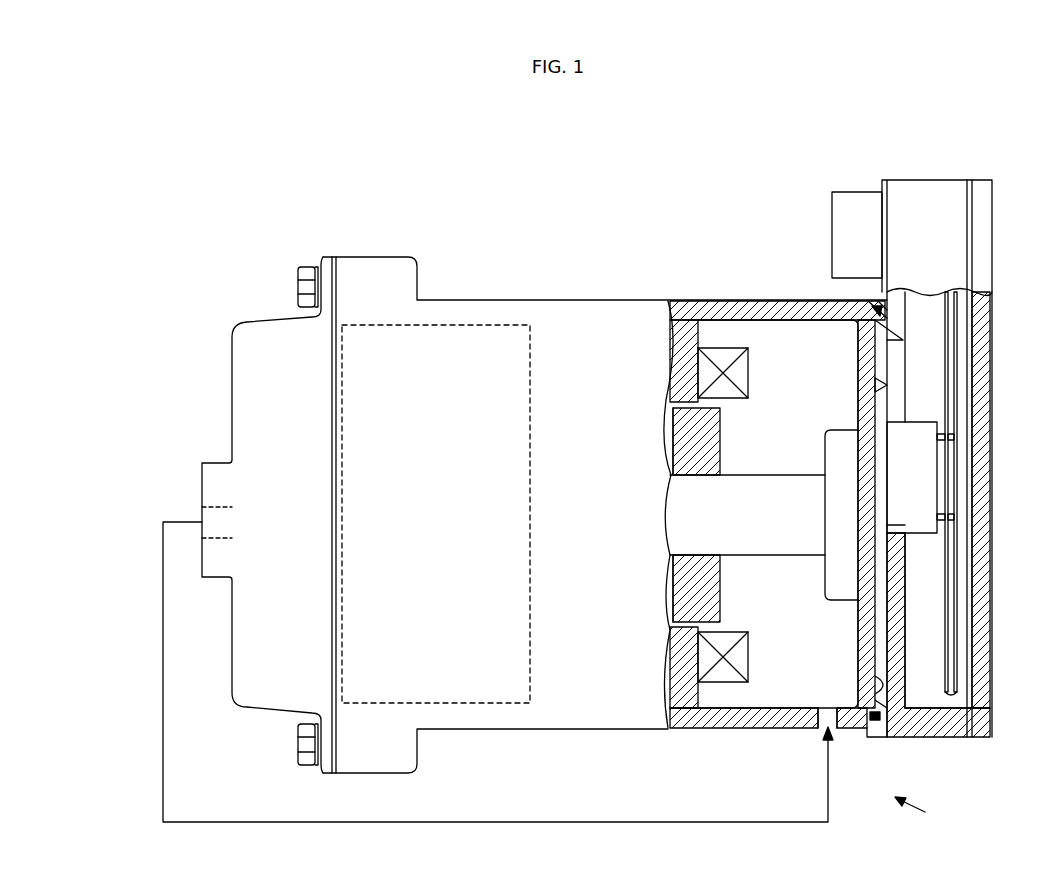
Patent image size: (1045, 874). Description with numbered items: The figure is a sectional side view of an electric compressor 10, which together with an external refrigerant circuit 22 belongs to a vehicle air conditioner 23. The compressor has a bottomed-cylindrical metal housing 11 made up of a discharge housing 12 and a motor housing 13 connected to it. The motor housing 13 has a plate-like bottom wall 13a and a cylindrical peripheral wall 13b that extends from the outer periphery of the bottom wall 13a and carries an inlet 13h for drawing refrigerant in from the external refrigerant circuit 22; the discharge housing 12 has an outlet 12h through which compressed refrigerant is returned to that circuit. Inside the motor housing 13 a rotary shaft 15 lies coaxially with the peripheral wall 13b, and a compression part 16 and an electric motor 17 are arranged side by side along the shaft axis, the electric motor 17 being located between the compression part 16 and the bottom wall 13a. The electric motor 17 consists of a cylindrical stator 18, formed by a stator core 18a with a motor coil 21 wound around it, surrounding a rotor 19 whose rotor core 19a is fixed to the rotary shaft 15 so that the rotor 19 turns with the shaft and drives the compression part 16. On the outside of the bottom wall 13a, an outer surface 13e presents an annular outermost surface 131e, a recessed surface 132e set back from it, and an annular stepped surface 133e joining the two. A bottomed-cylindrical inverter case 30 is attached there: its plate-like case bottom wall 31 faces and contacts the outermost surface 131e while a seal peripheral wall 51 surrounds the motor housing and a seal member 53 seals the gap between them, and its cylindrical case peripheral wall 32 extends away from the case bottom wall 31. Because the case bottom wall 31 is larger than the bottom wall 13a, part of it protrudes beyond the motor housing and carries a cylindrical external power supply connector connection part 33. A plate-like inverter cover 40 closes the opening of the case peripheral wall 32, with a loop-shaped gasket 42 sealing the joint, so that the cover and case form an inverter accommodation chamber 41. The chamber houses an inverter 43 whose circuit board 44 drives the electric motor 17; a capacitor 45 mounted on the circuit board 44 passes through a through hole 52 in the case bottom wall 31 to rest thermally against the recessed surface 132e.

The electric compressor 10 is at (242, 293).
The housing 11 is at (588, 300).
The discharge housing 12 is at (232, 345).
The outlet 12h is at (203, 512).
The motor housing 13 is at (704, 513).
The bottom wall 13a is at (860, 628).
The peripheral wall 13b is at (765, 310).
The outer surface 13e is at (885, 700).
The inlet 13h is at (822, 728).
The rotary shaft 15 is at (766, 552).
The compression part 16 is at (467, 325).
The electric motor 17 is at (690, 320).
The stator 18 is at (757, 515).
The stator core 18a is at (748, 362).
The rotor 19 is at (722, 440).
The rotor core 19a is at (673, 458).
The motor coil 21 is at (794, 356).
The external refrigerant circuit 22 is at (830, 793).
The vehicle air conditioner 23 is at (924, 812).
The inverter case 30 is at (955, 205).
The case bottom wall 31 is at (887, 660).
The case peripheral wall 32 is at (930, 737).
The external power supply connector connection part 33 is at (832, 210).
The inverter cover 40 is at (980, 222).
The inverter accommodation chamber 41 is at (932, 690).
The gasket 42 is at (970, 722).
The inverter 43 is at (957, 330).
The circuit board 44 is at (965, 355).
The capacitor 45 is at (897, 455).
The seal peripheral wall 51 is at (873, 728).
The through hole 52 is at (900, 528).
The seal member 53 is at (872, 300).
The outermost surface 131e is at (880, 330).
The recessed surface 132e is at (878, 385).
The stepped surface 133e is at (878, 685).